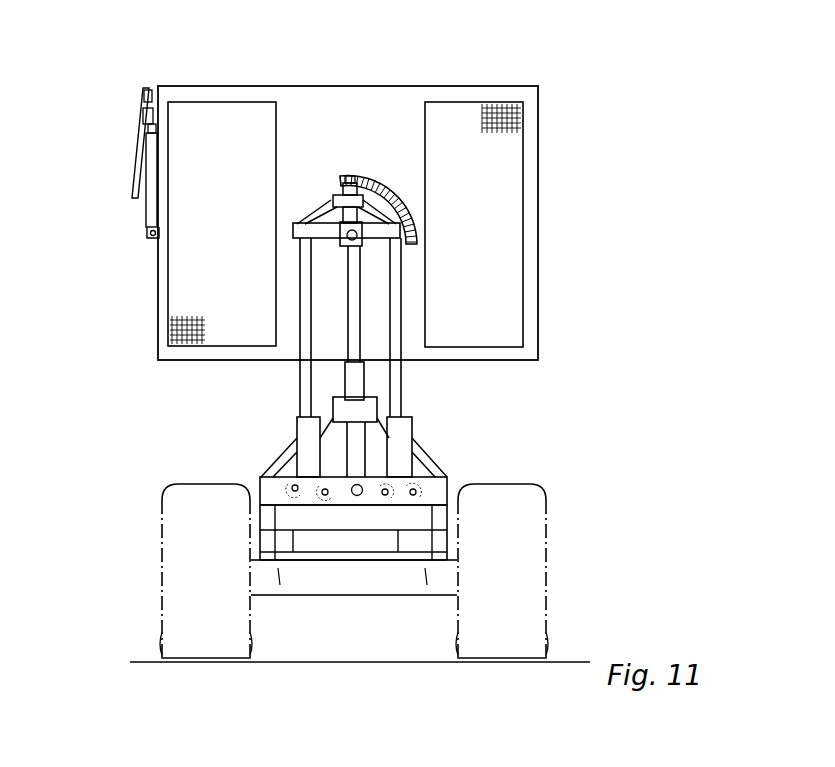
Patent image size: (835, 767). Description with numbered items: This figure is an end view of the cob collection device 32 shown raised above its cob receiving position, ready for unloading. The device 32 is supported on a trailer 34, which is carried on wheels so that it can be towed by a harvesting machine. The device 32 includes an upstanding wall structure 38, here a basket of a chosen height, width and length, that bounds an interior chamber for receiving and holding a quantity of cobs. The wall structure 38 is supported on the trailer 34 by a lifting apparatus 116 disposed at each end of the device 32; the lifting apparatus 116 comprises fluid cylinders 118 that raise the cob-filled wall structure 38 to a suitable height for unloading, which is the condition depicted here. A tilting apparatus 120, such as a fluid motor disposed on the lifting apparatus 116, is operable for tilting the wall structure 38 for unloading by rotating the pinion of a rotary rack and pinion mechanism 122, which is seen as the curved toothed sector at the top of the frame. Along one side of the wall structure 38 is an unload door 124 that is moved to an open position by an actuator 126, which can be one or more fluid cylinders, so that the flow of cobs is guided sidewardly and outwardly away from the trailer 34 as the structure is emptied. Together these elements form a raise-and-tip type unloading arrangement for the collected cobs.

The cob collection device 32 is at (503, 70).
The upstanding wall structure 38 is at (525, 86).
The rotary rack and pinion mechanism 122 is at (375, 176).
The tilting apparatus 120 is at (378, 218).
The lifting apparatus 116 is at (403, 293).
The fluid cylinder 118 is at (363, 380).
The unload door 124 is at (133, 148).
The actuator 126 is at (145, 212).
The trailer 34 is at (546, 515).